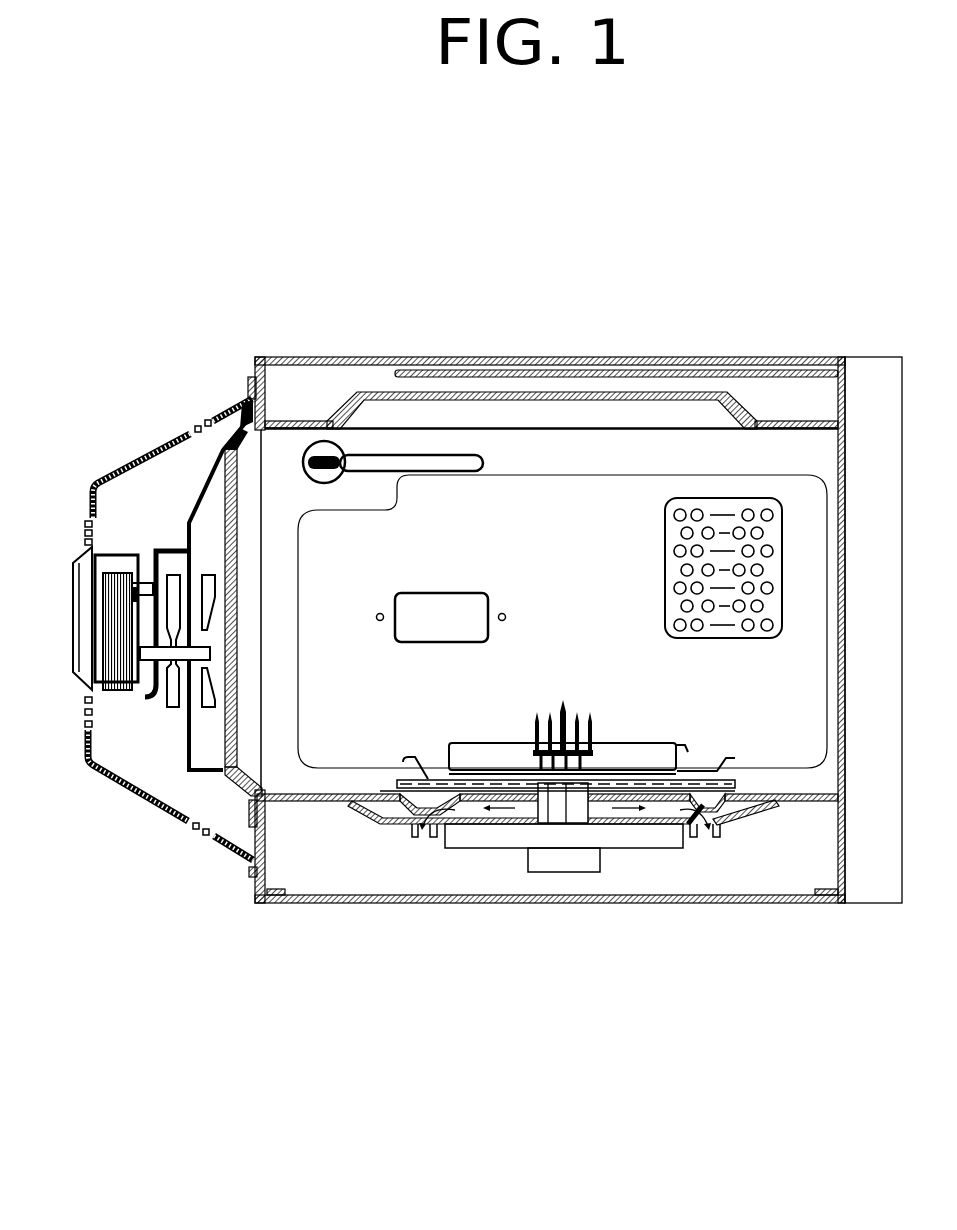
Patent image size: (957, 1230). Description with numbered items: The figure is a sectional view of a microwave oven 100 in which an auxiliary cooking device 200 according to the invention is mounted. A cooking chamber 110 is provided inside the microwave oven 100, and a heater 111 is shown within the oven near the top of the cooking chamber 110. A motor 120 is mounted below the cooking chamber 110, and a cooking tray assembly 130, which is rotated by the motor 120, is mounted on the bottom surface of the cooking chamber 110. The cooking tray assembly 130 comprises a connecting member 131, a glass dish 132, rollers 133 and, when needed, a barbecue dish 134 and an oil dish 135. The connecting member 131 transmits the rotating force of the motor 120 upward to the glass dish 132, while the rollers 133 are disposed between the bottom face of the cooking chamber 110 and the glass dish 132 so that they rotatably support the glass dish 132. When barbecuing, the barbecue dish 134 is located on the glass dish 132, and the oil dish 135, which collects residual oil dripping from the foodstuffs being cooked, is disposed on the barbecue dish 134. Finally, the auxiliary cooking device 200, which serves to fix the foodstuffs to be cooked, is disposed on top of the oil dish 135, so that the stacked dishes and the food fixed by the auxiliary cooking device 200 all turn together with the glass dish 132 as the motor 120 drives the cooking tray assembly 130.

The microwave oven 100 is at (702, 352).
The cooking chamber 110 is at (599, 545).
The heater 111 is at (415, 460).
The motor 120 is at (668, 843).
The cooking tray assembly 130 is at (522, 906).
The connecting member 131 is at (567, 790).
The glass dish 132 is at (383, 820).
The rollers 133 is at (440, 807).
The barbecue dish 134 is at (486, 770).
The oil dish 135 is at (482, 765).
The auxiliary cooking device 200 is at (604, 716).